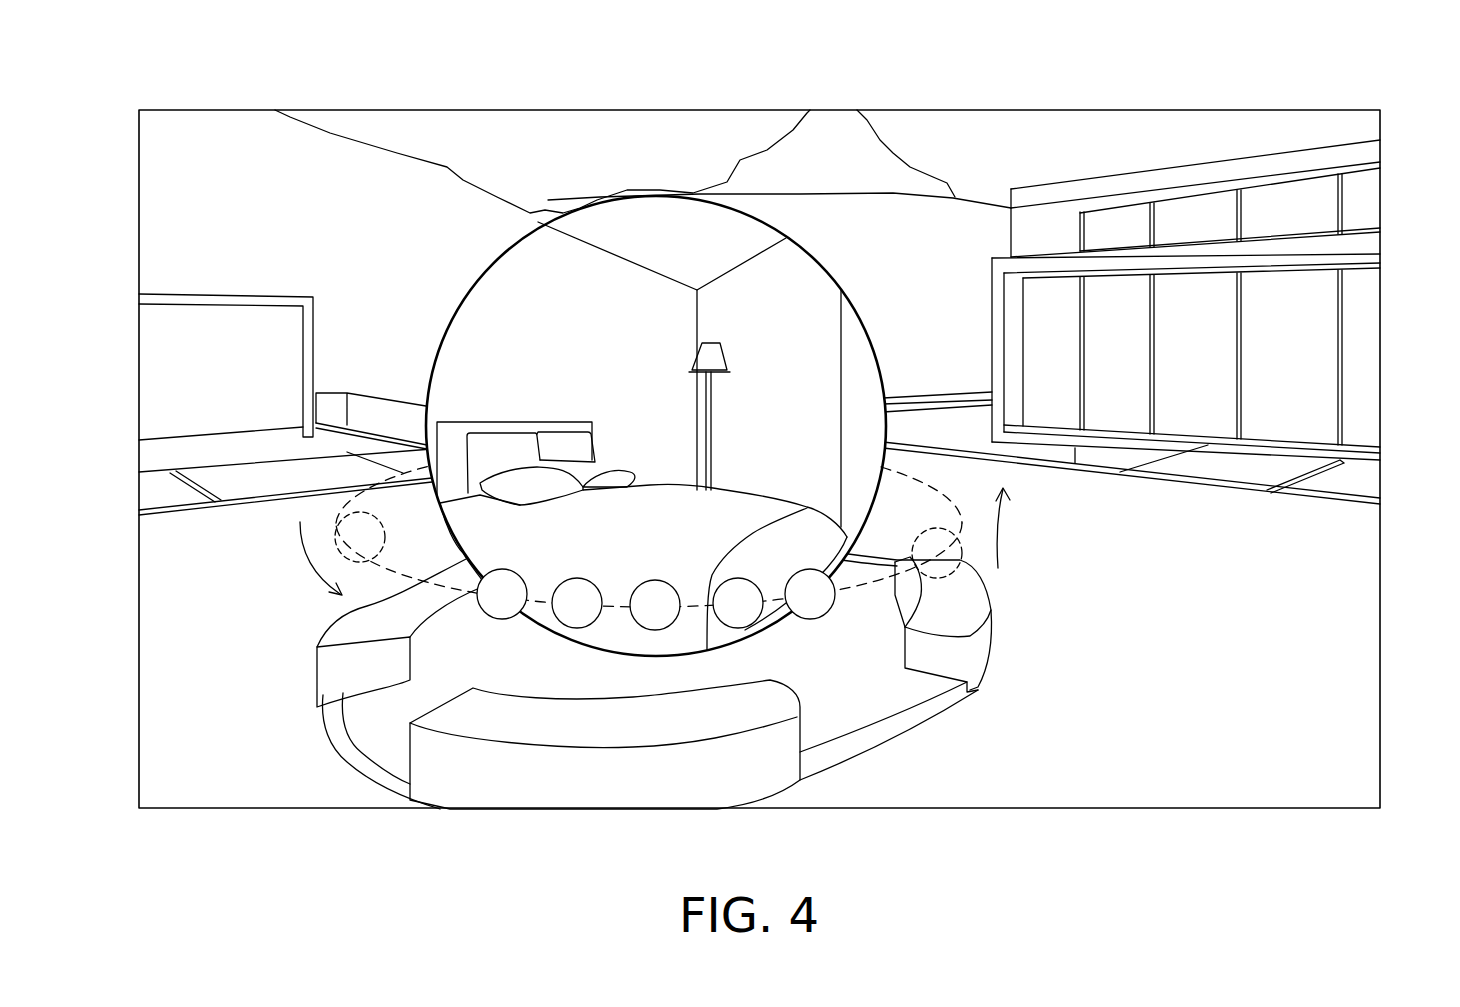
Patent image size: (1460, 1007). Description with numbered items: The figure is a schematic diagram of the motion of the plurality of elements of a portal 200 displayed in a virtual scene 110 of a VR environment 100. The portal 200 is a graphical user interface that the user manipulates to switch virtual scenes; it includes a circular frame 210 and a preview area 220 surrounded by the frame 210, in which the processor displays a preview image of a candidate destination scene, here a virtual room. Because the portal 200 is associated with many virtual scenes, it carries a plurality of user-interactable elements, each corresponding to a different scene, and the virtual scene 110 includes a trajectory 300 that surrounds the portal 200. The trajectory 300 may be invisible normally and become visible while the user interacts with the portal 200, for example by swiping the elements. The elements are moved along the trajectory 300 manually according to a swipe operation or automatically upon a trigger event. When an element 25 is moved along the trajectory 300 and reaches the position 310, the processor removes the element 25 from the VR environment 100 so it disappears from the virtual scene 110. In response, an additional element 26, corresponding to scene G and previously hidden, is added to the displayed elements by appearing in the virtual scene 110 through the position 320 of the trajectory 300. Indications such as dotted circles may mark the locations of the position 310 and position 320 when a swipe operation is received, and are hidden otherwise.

The VR environment 100 is at (1367, 860).
The virtual scene 110 is at (1005, 166).
The portal 200 is at (497, 53).
The frame 210 is at (742, 213).
The preview area 220 is at (530, 290).
The trajectory 300 is at (867, 583).
The position 310 is at (958, 520).
The position 320 is at (353, 522).
The element 25 is at (950, 577).
The element 26 is at (368, 563).